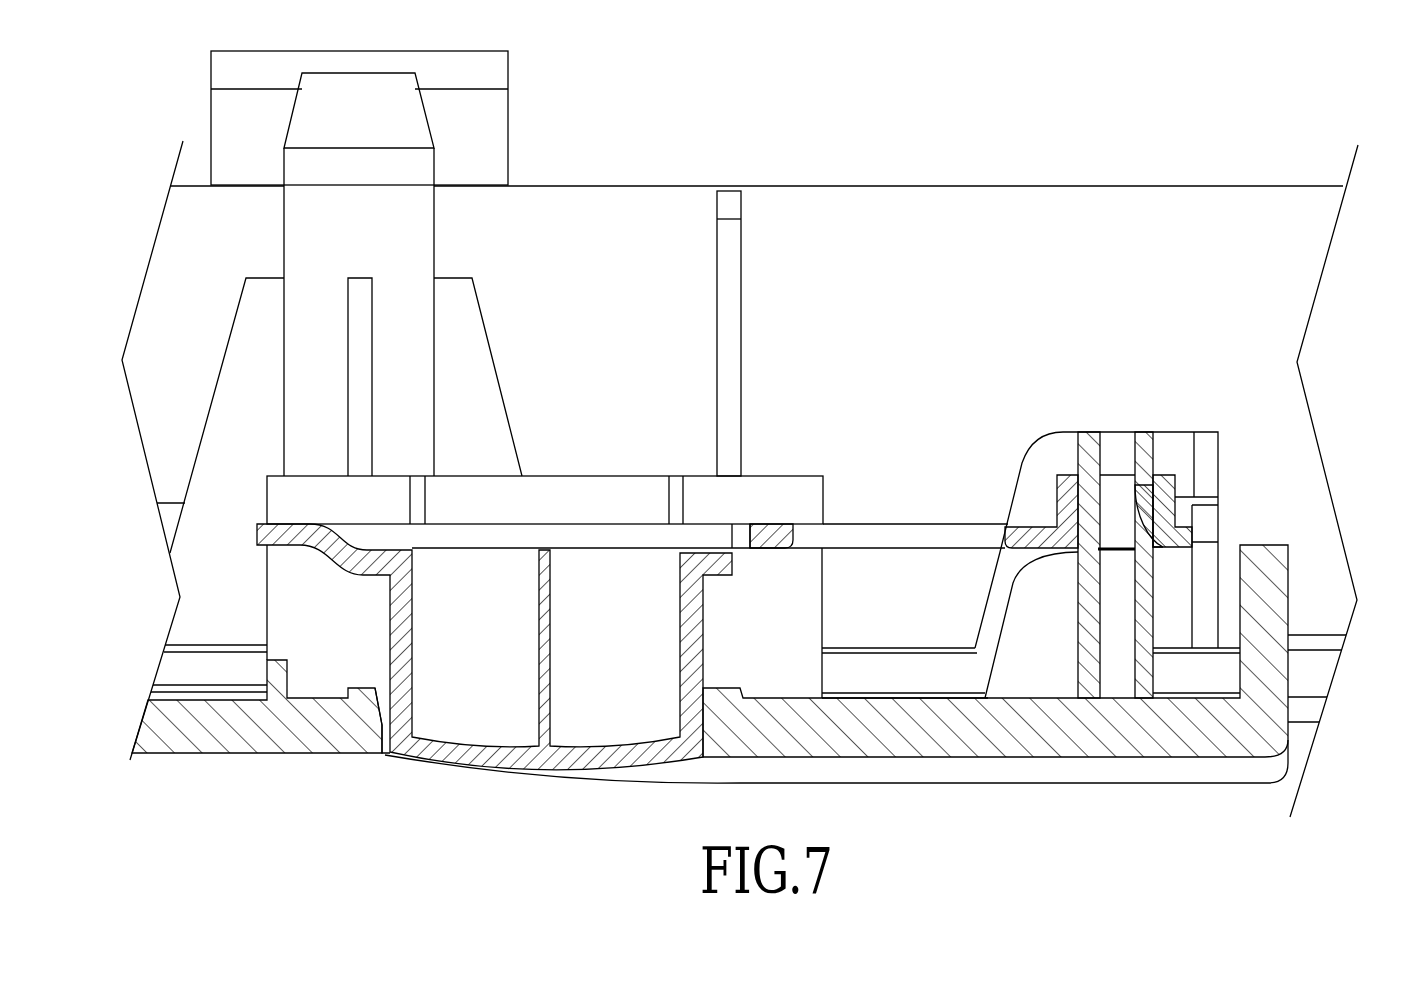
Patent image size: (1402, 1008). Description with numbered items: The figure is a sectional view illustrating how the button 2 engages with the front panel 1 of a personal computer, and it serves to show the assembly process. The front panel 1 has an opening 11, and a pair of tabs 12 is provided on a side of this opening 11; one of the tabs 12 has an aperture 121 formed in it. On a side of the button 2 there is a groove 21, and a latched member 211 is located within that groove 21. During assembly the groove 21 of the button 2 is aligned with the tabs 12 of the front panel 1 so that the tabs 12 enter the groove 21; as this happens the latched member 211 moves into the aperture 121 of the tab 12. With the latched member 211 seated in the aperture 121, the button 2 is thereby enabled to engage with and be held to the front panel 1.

The front panel 1 is at (963, 763).
The opening 11 is at (388, 758).
The tabs 12 is at (1142, 440).
The aperture 121 is at (1145, 530).
The button 2 is at (875, 521).
The groove 21 is at (1078, 477).
The latched member 211 is at (1133, 487).